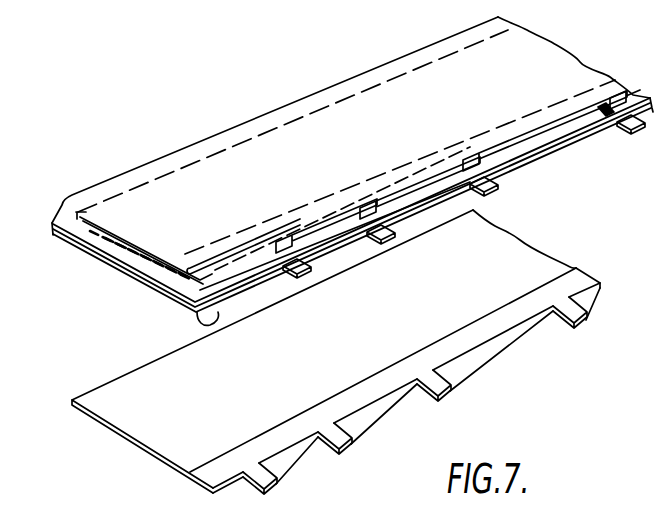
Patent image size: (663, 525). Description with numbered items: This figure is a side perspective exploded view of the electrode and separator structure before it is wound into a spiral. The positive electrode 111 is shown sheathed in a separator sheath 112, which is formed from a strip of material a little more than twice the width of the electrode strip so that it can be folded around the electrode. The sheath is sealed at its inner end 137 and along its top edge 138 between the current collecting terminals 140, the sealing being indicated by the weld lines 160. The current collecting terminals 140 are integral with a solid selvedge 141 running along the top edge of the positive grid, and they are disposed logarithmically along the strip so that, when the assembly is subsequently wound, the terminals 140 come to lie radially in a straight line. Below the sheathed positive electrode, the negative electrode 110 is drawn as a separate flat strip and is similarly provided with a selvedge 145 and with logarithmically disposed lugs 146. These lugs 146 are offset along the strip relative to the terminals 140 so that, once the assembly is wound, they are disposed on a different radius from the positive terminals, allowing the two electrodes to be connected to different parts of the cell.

The negative electrode 110 is at (104, 421).
The positive electrode 111 is at (172, 176).
The separator sheath 112 is at (103, 185).
The inner end 137 is at (53, 236).
The top edge 138 is at (215, 324).
The current collecting terminals 140 is at (303, 280).
The solid selvedge 141 is at (413, 161).
The selvedge 145 is at (502, 341).
The lugs 146 is at (279, 484).
The weld lines 160 is at (208, 279).